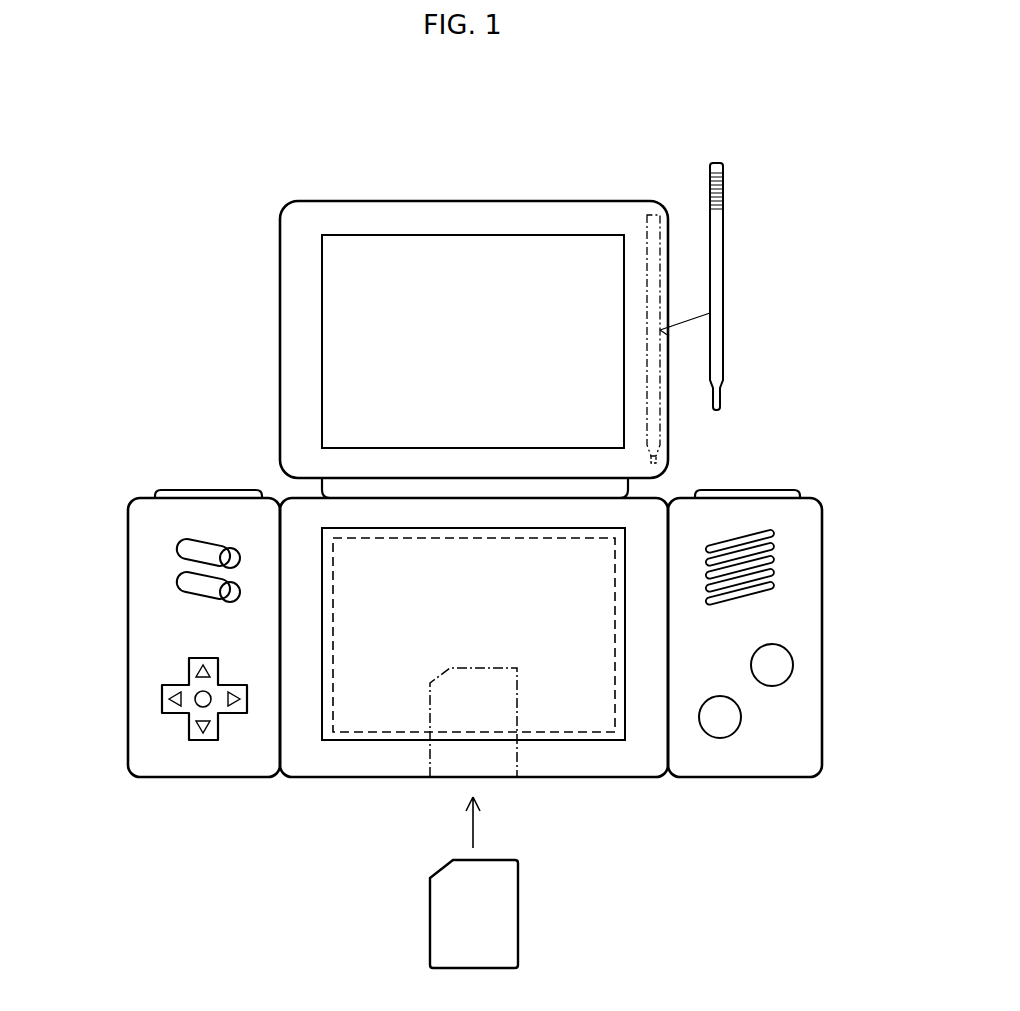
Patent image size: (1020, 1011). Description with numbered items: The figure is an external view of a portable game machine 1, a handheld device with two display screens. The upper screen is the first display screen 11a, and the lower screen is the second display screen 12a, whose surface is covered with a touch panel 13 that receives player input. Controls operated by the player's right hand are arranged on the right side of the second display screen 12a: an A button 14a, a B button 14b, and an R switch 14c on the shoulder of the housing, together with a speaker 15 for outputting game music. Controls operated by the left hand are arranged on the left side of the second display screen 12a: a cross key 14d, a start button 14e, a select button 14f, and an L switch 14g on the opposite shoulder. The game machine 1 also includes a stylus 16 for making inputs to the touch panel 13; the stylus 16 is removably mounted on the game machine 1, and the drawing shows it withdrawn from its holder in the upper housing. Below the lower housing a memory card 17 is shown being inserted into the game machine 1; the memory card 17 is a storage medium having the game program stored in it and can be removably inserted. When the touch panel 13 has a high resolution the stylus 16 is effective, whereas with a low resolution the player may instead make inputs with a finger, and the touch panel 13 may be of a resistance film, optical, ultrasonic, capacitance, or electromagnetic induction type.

The portable game machine 1 is at (599, 172).
The first display screen 11a is at (503, 338).
The second display screen 12a is at (503, 642).
The touch panel 13 is at (590, 735).
The A button 14a is at (793, 664).
The B button 14b is at (741, 718).
The R switch 14c is at (750, 490).
The cross key 14d is at (163, 703).
The start button 14e is at (168, 538).
The select button 14f is at (172, 582).
The L switch 14g is at (210, 490).
The speaker 15 is at (775, 562).
The stylus 16 is at (724, 268).
The memory card 17 is at (518, 923).